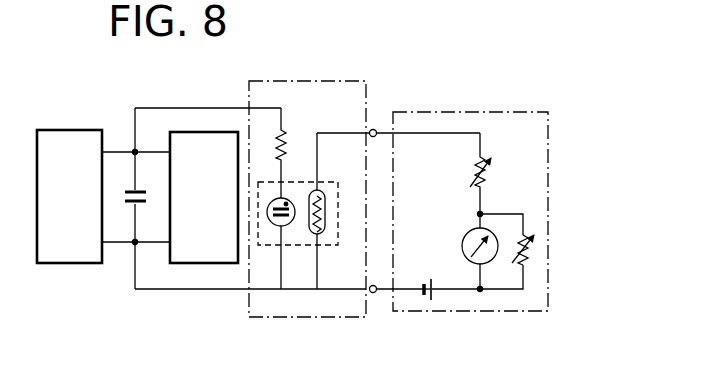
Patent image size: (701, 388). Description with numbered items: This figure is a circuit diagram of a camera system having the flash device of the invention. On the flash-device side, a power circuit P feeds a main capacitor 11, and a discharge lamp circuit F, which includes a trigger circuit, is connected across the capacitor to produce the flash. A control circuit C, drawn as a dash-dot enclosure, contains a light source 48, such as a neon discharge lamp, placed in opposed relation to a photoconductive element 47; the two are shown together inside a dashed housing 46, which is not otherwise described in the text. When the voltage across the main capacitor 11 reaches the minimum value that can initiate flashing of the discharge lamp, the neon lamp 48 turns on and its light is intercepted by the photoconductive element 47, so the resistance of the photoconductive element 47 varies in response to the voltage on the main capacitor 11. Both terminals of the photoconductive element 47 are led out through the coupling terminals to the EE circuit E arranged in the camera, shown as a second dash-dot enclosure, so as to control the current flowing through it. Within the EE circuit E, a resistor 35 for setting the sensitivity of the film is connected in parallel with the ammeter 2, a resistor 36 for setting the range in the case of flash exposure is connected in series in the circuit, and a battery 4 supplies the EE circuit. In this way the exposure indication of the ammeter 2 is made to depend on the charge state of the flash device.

The power circuit P is at (70, 130).
The discharge lamp circuit F is at (200, 132).
The control circuit C is at (338, 81).
The EE circuit E is at (476, 111).
The main capacitor 11 is at (139, 191).
The housing 46 is at (330, 247).
The photoconductive element 47 is at (318, 190).
The light source 48 is at (275, 238).
The resistor 36 is at (486, 172).
The resistor 35 is at (528, 250).
The ammeter 2 is at (462, 238).
The battery 4 is at (425, 283).